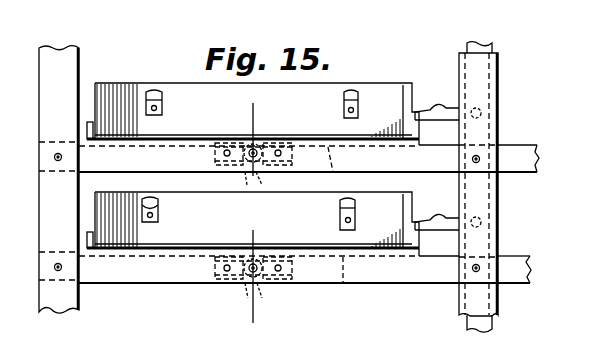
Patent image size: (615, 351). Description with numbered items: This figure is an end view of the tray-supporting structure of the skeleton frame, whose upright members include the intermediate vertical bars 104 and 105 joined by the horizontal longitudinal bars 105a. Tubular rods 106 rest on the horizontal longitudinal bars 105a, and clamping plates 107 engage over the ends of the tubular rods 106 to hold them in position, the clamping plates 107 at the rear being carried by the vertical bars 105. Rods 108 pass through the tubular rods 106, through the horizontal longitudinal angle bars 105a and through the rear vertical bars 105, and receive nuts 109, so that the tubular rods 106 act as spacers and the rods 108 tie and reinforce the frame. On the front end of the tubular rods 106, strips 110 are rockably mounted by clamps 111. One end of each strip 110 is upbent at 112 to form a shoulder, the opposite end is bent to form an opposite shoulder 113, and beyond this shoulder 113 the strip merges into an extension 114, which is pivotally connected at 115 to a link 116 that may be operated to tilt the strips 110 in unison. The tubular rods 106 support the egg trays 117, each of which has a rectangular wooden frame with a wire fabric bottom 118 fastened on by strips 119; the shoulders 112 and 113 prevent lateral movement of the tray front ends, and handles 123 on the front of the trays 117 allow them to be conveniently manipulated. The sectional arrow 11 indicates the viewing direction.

The direction arrow / section line 11 is at (332, 98).
The intermediate vertical bar 104 is at (40, 189).
The intermediate vertical bar 105 is at (492, 222).
The horizontal longitudinal bar 105a is at (530, 150).
The tubular rod 106 is at (250, 168).
The clamping plate 107 is at (255, 134).
The rod 108 is at (240, 175).
The nut 109 is at (217, 153).
The strip 110 is at (334, 173).
The clamp 111 is at (256, 185).
The upbent end shoulder 112 is at (88, 122).
The opposite shoulder 113 is at (403, 92).
The extension 114 is at (442, 103).
The pivotal connection 115 is at (482, 110).
The link 116 is at (492, 48).
The egg tray 117 is at (183, 83).
The wire fabric bottom 118 is at (190, 122).
The strip 119 is at (100, 283).
The handle 123 is at (163, 100).